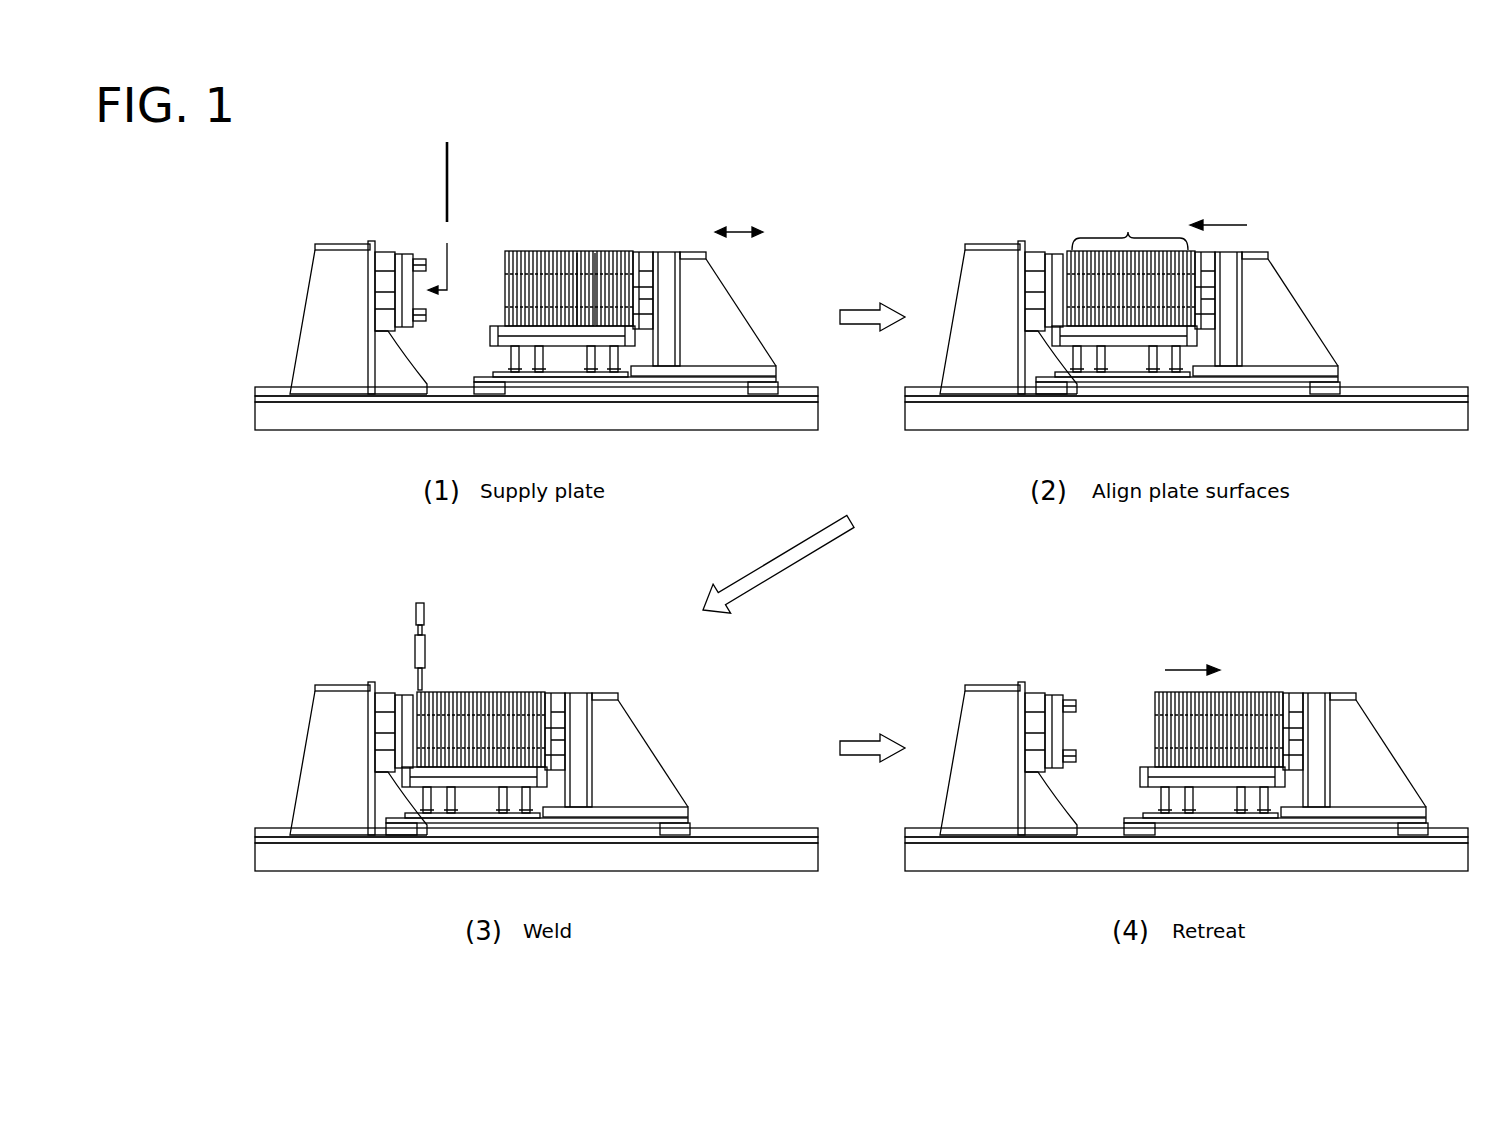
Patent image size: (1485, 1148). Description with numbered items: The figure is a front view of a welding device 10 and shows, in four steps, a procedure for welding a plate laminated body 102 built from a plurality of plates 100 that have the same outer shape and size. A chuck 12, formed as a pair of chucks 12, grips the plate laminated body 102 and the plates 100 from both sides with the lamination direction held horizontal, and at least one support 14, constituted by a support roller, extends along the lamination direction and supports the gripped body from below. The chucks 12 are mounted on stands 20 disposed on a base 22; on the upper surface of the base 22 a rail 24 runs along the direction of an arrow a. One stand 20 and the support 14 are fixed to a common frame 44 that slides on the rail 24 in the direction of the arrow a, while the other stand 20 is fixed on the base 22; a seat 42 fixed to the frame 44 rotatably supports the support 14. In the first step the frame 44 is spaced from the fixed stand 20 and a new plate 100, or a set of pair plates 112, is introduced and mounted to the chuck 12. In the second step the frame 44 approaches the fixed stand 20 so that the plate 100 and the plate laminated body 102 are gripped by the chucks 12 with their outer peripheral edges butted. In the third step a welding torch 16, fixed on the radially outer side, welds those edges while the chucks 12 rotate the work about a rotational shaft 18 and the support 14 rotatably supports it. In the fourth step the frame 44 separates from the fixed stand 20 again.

The welding device 10 is at (790, 146).
The chuck 12 is at (407, 253).
The support 14 is at (500, 325).
The welding torch 16 is at (425, 657).
The rotational shaft 18 is at (395, 253).
The stand 20 is at (315, 308).
The base 22 is at (792, 424).
The rail 24 is at (790, 393).
The seat 42 is at (490, 337).
The frame 44 is at (782, 375).
The plate 100 is at (447, 146).
The plate laminated body 102 is at (577, 243).
The pair plates 112 is at (883, 223).
The arrow a is at (742, 226).